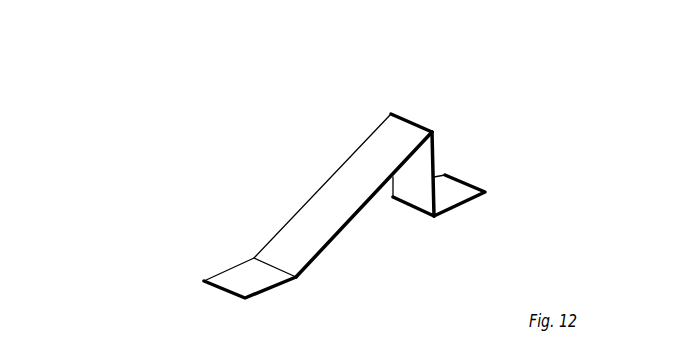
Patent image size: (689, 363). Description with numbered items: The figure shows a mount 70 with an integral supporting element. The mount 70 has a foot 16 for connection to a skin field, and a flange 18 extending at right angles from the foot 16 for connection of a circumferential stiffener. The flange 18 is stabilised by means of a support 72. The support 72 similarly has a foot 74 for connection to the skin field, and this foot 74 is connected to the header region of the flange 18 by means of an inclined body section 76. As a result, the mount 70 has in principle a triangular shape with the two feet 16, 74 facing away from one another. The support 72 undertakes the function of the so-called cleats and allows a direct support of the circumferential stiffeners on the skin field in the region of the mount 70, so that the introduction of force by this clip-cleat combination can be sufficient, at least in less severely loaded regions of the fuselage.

The mount 70 is at (67, 25).
The support 72 is at (329, 169).
The foot 74 is at (244, 275).
The inclined body section 76 is at (378, 150).
The flange 18 is at (428, 160).
The foot 16 is at (468, 184).